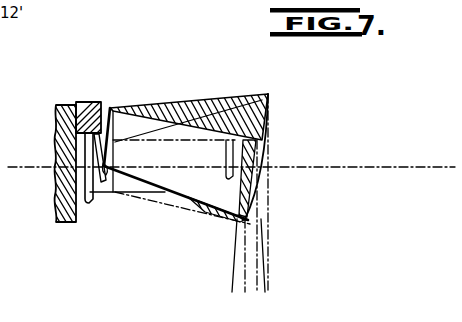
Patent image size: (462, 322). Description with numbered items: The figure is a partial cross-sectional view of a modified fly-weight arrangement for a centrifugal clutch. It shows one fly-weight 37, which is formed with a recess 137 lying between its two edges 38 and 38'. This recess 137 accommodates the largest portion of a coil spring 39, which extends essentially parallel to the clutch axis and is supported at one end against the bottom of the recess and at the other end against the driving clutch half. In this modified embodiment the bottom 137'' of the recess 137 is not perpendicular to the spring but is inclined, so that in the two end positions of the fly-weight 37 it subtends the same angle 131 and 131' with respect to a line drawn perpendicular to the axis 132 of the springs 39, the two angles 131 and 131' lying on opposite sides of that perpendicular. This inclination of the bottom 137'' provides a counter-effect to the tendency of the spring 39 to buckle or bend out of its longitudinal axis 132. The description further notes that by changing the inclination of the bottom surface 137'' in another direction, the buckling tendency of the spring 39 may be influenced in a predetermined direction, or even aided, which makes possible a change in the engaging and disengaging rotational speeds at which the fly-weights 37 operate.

The axis of the springs 132 is at (41, 168).
The coil spring 39 is at (89, 203).
The fly-weight 37 is at (205, 96).
The recess 137 is at (188, 106).
The bottom of the recess 137'' is at (212, 158).
The edge 38 is at (275, 155).
The edge 38' is at (269, 209).
The angle 131 is at (229, 193).
The angle 131' is at (290, 216).